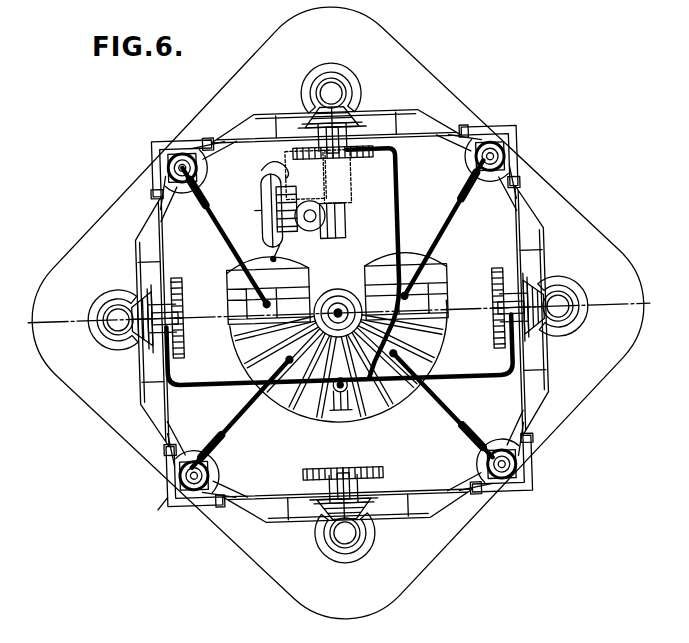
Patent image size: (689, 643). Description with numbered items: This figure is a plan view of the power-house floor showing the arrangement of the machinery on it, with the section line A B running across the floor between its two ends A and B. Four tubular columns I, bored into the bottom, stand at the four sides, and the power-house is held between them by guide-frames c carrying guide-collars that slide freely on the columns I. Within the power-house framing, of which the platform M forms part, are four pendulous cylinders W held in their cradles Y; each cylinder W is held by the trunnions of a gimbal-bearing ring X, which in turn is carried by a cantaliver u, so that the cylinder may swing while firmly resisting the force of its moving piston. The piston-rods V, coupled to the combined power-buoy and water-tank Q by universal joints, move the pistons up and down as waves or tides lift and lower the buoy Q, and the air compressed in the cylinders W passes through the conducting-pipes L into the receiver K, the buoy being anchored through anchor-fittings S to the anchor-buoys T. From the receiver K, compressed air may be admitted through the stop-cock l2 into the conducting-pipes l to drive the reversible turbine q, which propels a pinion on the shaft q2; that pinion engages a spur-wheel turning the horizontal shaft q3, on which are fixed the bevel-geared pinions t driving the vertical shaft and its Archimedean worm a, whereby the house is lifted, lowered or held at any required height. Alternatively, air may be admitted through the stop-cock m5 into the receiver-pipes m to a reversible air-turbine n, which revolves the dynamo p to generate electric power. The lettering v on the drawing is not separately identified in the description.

The section line A B A is at (174, 319).
The section line A B is at (502, 302).
The platform M is at (468, 490).
The channel side face v is at (342, 316).
The combined power-buoy and water-tank Q is at (524, 488).
The gimbal-ring X is at (508, 456).
The cradle Y is at (510, 448).
The pendulous cylinder W is at (490, 475).
The cantaliver u is at (500, 428).
The piston-rod V is at (342, 310).
The conducting-pipe L is at (444, 392).
The receiver K is at (450, 296).
The dynamo p is at (337, 286).
The turbine n is at (266, 188).
The receiver-pipe m is at (272, 168).
The stop-cock m5 is at (272, 256).
The conducting-pipe l is at (445, 378).
The stop-cock l2 is at (360, 405).
The tubular column I is at (330, 548).
The bevel-geared pinion t is at (360, 528).
The Archimedean worm a is at (372, 512).
The anchor-buoy T is at (312, 496).
The anchor-fitting S is at (500, 304).
The turbine q is at (316, 480).
The shaft q2 is at (336, 480).
The horizontal shaft q3 is at (352, 480).
The guide-frame c is at (152, 510).